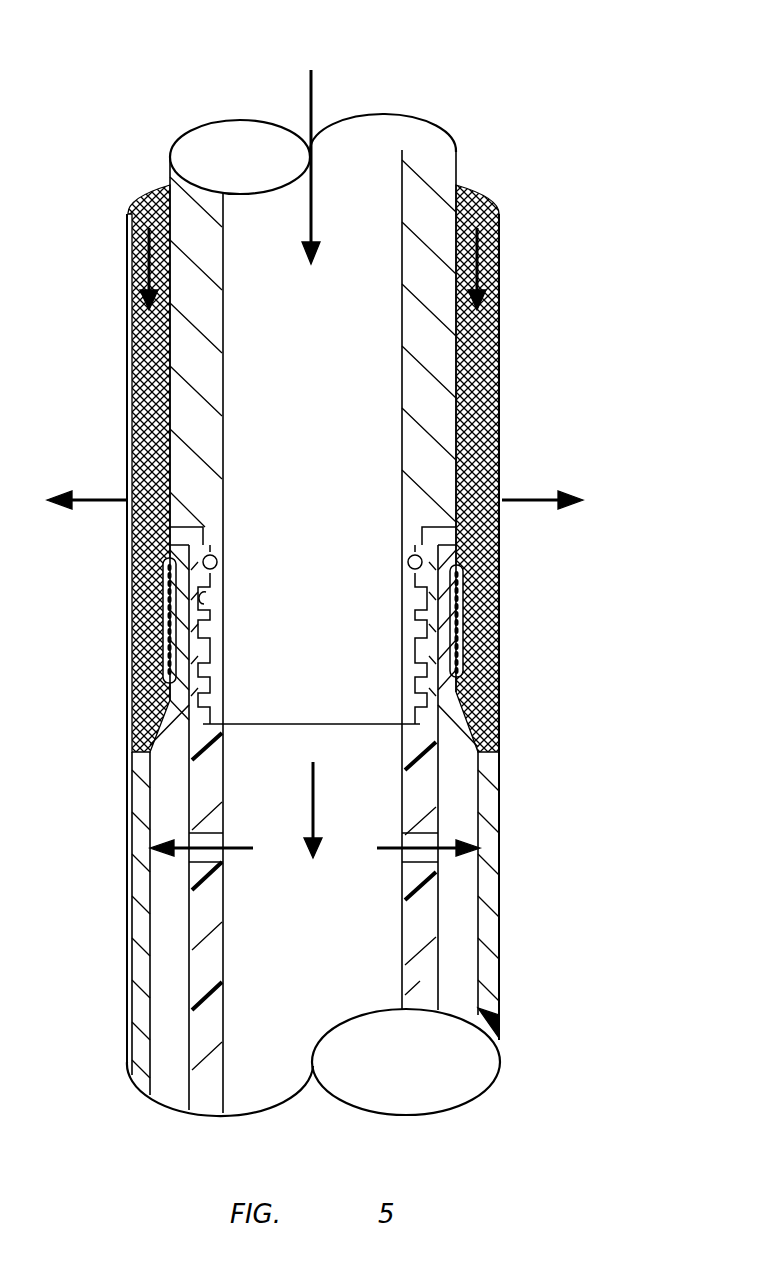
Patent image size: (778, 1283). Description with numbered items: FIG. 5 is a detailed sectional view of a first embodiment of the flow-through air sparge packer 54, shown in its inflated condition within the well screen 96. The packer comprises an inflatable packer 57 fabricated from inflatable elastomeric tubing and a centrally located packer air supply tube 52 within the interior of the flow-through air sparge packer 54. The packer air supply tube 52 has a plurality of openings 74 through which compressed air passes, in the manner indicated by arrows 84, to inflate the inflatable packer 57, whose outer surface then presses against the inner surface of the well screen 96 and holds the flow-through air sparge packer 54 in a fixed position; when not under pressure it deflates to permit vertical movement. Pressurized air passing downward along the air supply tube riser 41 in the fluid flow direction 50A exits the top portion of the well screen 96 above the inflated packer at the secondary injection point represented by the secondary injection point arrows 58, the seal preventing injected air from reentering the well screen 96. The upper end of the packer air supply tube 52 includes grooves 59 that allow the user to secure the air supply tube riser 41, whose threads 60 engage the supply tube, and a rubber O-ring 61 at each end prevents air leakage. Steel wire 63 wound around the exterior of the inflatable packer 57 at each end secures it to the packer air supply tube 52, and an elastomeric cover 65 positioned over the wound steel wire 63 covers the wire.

The fluid flow direction 50A is at (311, 86).
The air supply tube riser 41 is at (427, 146).
The secondary injection point arrows 58 is at (97, 498).
The well screen 96 is at (128, 592).
The elastomeric cover 65 is at (422, 527).
The rubber O-ring 61 is at (408, 563).
The threads 60 is at (205, 603).
The grooves 59 is at (412, 632).
The steel wire 63 is at (195, 662).
The inflatable packer 57 is at (500, 895).
The flow-through air sparge packer 54 is at (516, 939).
The packer air supply tube 52 is at (413, 952).
The openings 74 is at (212, 823).
The arrows 84 is at (238, 853).